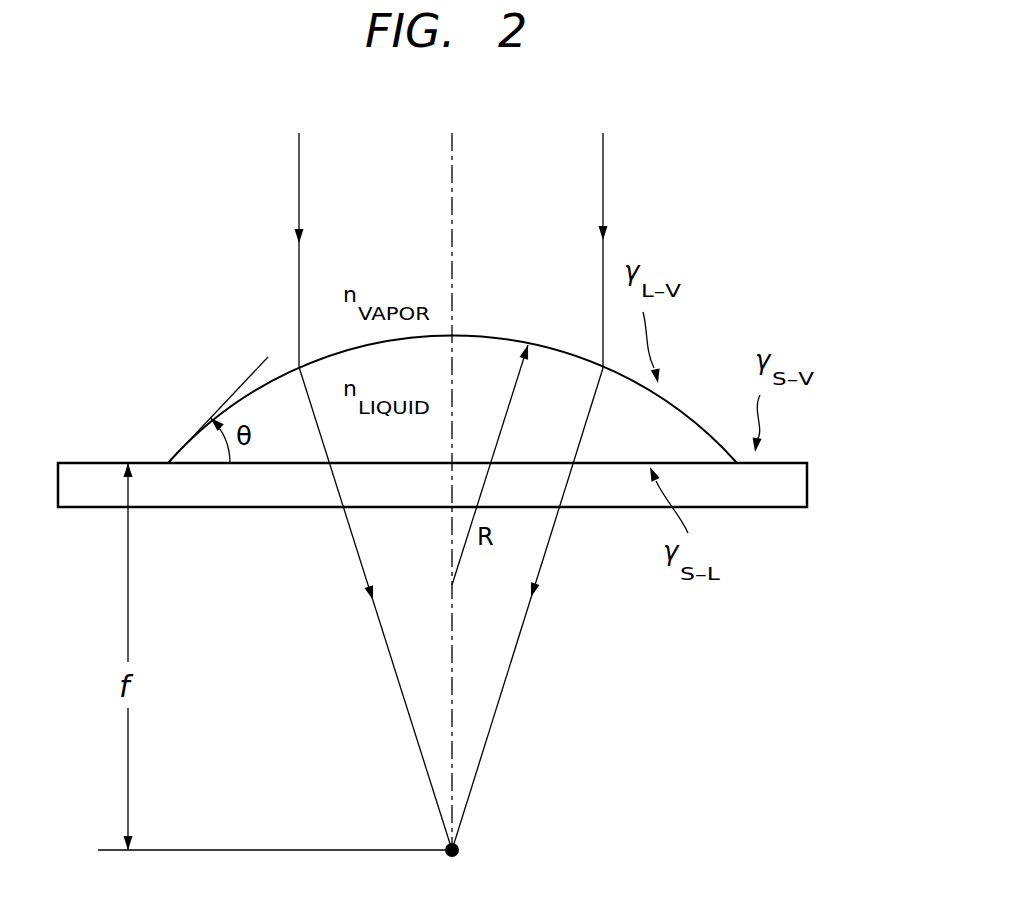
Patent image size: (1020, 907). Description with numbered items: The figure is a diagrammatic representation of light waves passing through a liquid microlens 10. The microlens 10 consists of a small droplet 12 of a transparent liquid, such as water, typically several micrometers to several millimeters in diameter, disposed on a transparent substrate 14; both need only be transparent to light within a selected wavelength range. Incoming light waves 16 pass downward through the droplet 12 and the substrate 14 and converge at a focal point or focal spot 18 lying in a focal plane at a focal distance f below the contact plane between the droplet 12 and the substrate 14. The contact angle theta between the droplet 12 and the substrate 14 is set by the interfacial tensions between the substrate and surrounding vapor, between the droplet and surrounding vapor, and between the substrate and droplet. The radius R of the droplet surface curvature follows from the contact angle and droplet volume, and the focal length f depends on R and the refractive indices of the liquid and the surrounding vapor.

The liquid microlens 10 is at (142, 228).
The droplet 12 is at (473, 335).
The transparent substrate 14 is at (807, 483).
The light waves 16 is at (299, 150).
The focal point 18 is at (460, 851).